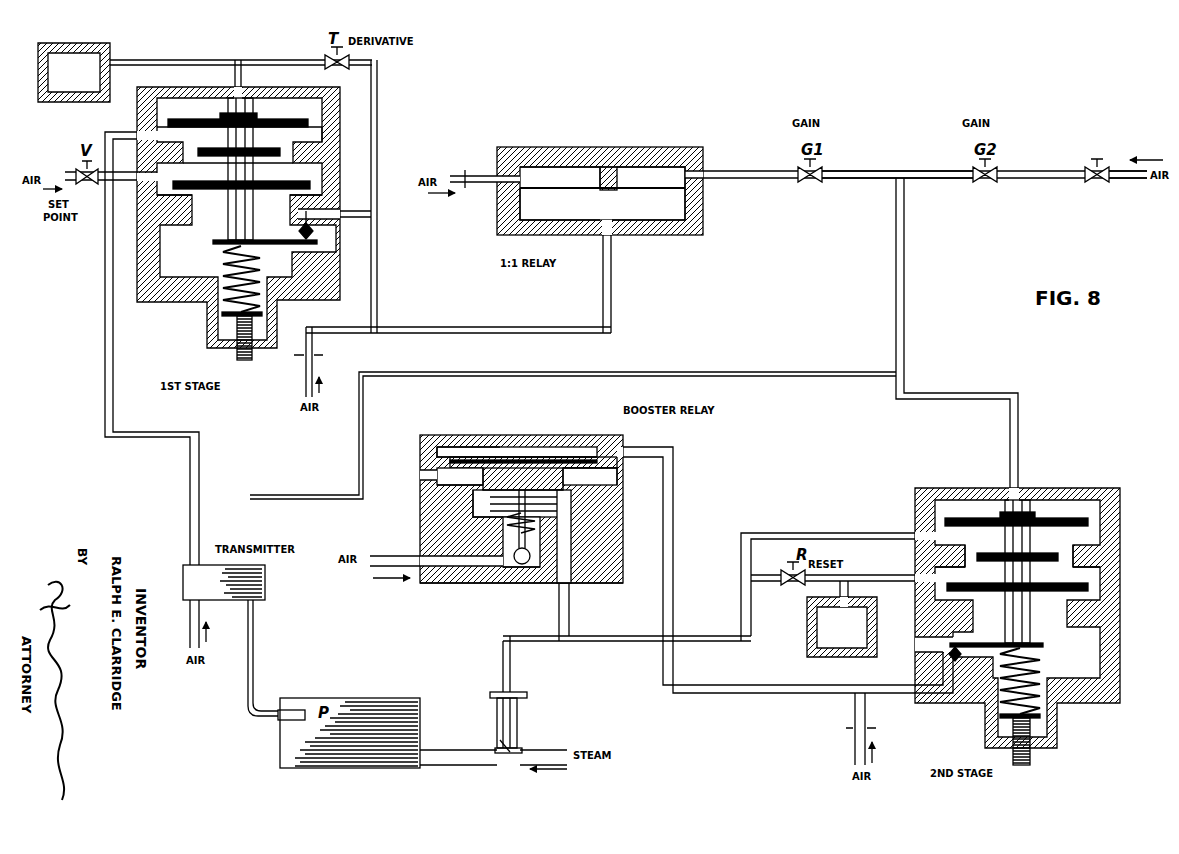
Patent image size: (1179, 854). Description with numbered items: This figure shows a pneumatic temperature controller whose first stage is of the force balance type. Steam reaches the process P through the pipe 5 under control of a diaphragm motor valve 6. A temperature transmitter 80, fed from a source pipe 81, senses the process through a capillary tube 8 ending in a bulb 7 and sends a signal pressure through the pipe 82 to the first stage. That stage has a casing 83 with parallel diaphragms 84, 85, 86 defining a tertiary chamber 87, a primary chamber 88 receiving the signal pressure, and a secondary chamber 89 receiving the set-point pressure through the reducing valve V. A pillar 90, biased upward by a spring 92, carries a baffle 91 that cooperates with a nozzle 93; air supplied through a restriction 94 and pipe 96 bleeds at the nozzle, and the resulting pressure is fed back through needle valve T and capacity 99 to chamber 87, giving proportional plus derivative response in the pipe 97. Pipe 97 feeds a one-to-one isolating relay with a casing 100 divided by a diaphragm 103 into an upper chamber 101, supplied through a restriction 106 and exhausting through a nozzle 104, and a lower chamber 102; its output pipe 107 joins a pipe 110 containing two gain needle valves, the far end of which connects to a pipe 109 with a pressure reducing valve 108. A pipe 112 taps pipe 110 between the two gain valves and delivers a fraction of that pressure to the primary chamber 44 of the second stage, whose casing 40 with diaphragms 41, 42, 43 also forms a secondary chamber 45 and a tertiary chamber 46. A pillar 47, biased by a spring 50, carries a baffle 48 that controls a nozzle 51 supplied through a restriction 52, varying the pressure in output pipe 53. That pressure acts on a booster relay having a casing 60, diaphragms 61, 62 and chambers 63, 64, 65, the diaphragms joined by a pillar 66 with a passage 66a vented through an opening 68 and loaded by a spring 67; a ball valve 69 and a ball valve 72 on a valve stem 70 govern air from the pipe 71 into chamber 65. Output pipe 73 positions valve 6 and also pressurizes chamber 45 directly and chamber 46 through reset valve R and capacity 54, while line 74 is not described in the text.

The steam pipe 5 is at (551, 749).
The diaphragm motor valve 6 is at (497, 717).
The bulb 7 is at (292, 710).
The capillary tube 8 is at (254, 655).
The casing 40 is at (1118, 493).
The diaphragm 41 is at (1090, 523).
The diaphragm 42 is at (1060, 557).
The diaphragm 43 is at (1090, 588).
The primary chamber 44 is at (1032, 512).
The secondary chamber 45 is at (1019, 551).
The tertiary chamber 46 is at (1017, 576).
The pillar 47 is at (1024, 621).
The baffle 48 is at (987, 641).
The spring 50 is at (1041, 660).
The nozzle 51 is at (961, 654).
The restriction 52 is at (846, 730).
The output pipe 53 is at (855, 712).
The capacity 54 is at (828, 621).
The casing 60 is at (440, 434).
The diaphragm 61 is at (440, 460).
The diaphragm 62 is at (435, 489).
The chamber 63 is at (458, 447).
The chamber 64 is at (595, 470).
The chamber 65 is at (483, 505).
The pillar 66 is at (494, 458).
The passage 66a is at (517, 478).
The spring 67 is at (563, 505).
The opening 68 is at (435, 474).
The ball valve 69 is at (545, 478).
The valve stem 70 is at (485, 585).
The pipe 71 is at (390, 562).
The ball valve 72 is at (522, 585).
The pipe 73 is at (570, 607).
The line 74 is at (694, 637).
The temperature transmitter 80 is at (266, 585).
The source pipe 81 is at (190, 629).
The pipe 82 is at (200, 467).
The casing 83 is at (341, 103).
The diaphragm 84 is at (309, 123).
The diaphragm 85 is at (281, 153).
The diaphragm 86 is at (311, 186).
The tertiary chamber 87 is at (238, 113).
The primary chamber 88 is at (240, 143).
The secondary chamber 89 is at (241, 176).
The pillar 90 is at (243, 221).
The baffle 91 is at (284, 241).
The spring 92 is at (227, 258).
The nozzle 93 is at (307, 232).
The restriction 94 is at (320, 355).
The pipe 96 is at (378, 74).
The pipe 97 is at (460, 327).
The capacity 99 is at (86, 62).
The casing 100 is at (641, 148).
The upper chamber 101 is at (651, 179).
The lower chamber 102 is at (648, 204).
The diaphragm 103 is at (560, 204).
The nozzle 104 is at (596, 181).
The restriction 106 is at (467, 172).
The output pipe 107 is at (741, 171).
The pressure reducing valve 108 is at (1098, 159).
The pipe 109 is at (1132, 180).
The pipe 110 is at (888, 170).
The pipe 112 is at (906, 320).